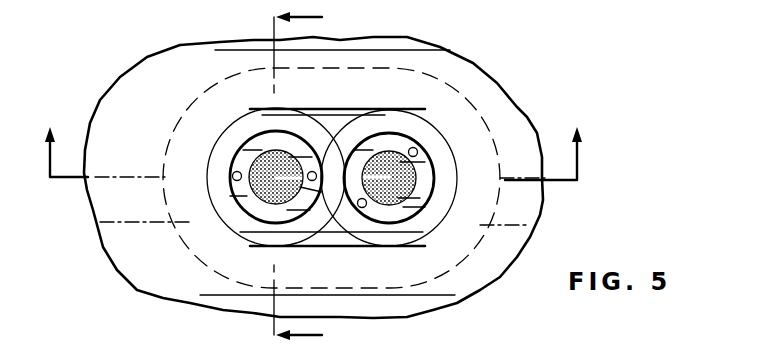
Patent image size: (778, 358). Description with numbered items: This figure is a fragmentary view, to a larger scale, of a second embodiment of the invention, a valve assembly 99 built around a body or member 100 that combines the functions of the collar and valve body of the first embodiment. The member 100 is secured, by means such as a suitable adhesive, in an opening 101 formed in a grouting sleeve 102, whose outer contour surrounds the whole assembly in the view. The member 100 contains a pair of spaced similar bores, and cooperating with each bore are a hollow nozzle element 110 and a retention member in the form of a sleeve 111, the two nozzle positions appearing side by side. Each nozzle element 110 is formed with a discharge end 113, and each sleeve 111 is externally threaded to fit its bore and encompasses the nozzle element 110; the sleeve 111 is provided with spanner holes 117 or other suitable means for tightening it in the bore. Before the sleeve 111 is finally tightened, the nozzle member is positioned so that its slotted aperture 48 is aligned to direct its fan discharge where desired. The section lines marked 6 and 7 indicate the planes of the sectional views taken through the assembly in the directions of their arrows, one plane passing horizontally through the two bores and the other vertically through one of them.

The section line 6- 6 is at (310, 153).
The section line 7- 7 is at (285, 177).
The slotted aperture 48 is at (322, 192).
The valve assembly 99 is at (361, 235).
The body or member 100 is at (383, 240).
The opening 101 is at (320, 112).
The grouting sleeve 102 is at (518, 124).
The hollow nozzle element 110 is at (245, 197).
The sleeve 111 is at (250, 140).
The discharge end 113 is at (272, 192).
The spanner holes 117 is at (234, 172).